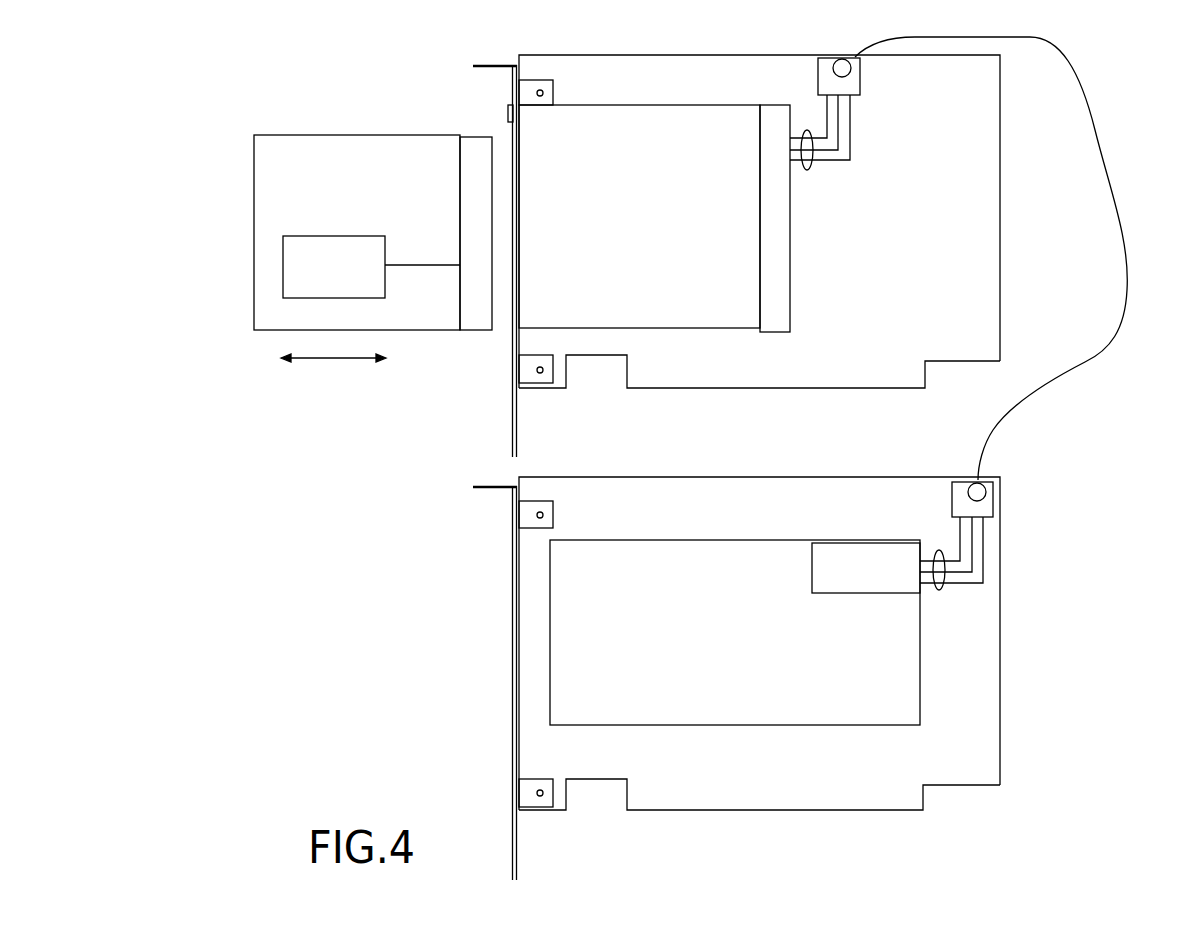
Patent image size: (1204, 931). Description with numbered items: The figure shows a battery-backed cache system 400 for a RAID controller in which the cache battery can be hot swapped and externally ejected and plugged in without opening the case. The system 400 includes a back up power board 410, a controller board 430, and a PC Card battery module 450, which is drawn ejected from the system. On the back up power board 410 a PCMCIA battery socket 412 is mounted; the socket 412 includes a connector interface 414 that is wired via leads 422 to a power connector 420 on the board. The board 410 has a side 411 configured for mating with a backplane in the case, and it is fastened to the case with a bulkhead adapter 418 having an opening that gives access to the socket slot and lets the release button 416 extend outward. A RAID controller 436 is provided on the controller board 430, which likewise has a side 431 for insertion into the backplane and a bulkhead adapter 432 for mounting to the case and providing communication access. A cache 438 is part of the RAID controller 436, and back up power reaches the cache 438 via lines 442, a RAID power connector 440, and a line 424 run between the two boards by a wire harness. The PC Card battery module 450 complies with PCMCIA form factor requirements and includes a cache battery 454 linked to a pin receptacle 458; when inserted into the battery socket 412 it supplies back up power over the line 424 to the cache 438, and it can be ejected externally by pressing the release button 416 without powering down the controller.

The system 400 is at (330, 87).
The back up power board 410 is at (612, 53).
The side 411 is at (722, 387).
The PCMCIA battery socket 412 is at (622, 105).
The connector interface 414 is at (770, 105).
The release button 416 is at (508, 112).
The bulkhead adapter 418 is at (500, 65).
The power connector 420 is at (862, 80).
The leads 422 is at (815, 165).
The line 424 is at (1103, 160).
The controller board 430 is at (580, 477).
The side 431 is at (743, 810).
The bulkhead adapter 432 is at (495, 490).
The RAID controller 436 is at (675, 540).
The cache 438 is at (812, 555).
The RAID power connector 440 is at (952, 495).
The lines 442 is at (948, 583).
The PC Card battery module 450 is at (240, 172).
The cache battery 454 is at (283, 253).
The pin receptacle 458 is at (458, 308).